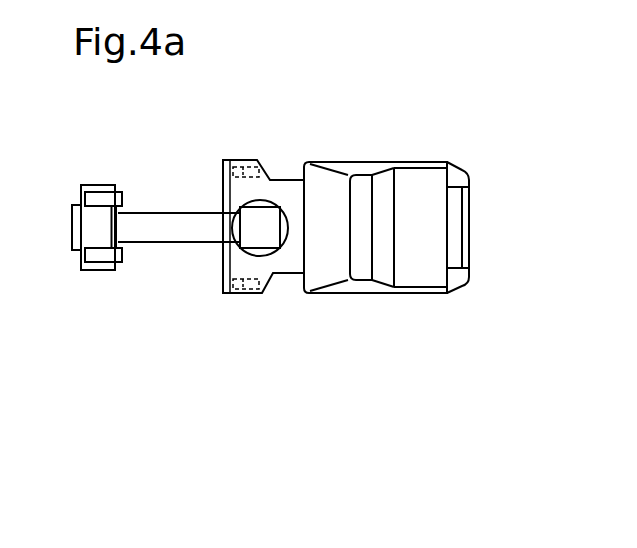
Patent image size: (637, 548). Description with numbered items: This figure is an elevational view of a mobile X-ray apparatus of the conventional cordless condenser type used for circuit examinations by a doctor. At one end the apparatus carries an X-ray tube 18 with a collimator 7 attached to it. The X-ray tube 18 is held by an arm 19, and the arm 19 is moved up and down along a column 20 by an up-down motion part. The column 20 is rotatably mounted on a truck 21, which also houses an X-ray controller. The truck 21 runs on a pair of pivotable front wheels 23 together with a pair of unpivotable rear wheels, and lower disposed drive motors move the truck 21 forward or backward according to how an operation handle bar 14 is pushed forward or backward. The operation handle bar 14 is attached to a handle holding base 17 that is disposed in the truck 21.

The collimator 7 is at (72, 226).
The operation handle bar 14 is at (470, 230).
The handle holding base 17 is at (463, 277).
The X-ray tube 18 is at (113, 185).
The arm 19 is at (155, 213).
The column 20 is at (265, 217).
The truck 21 is at (381, 162).
The pivotable front wheels 23 is at (263, 168).